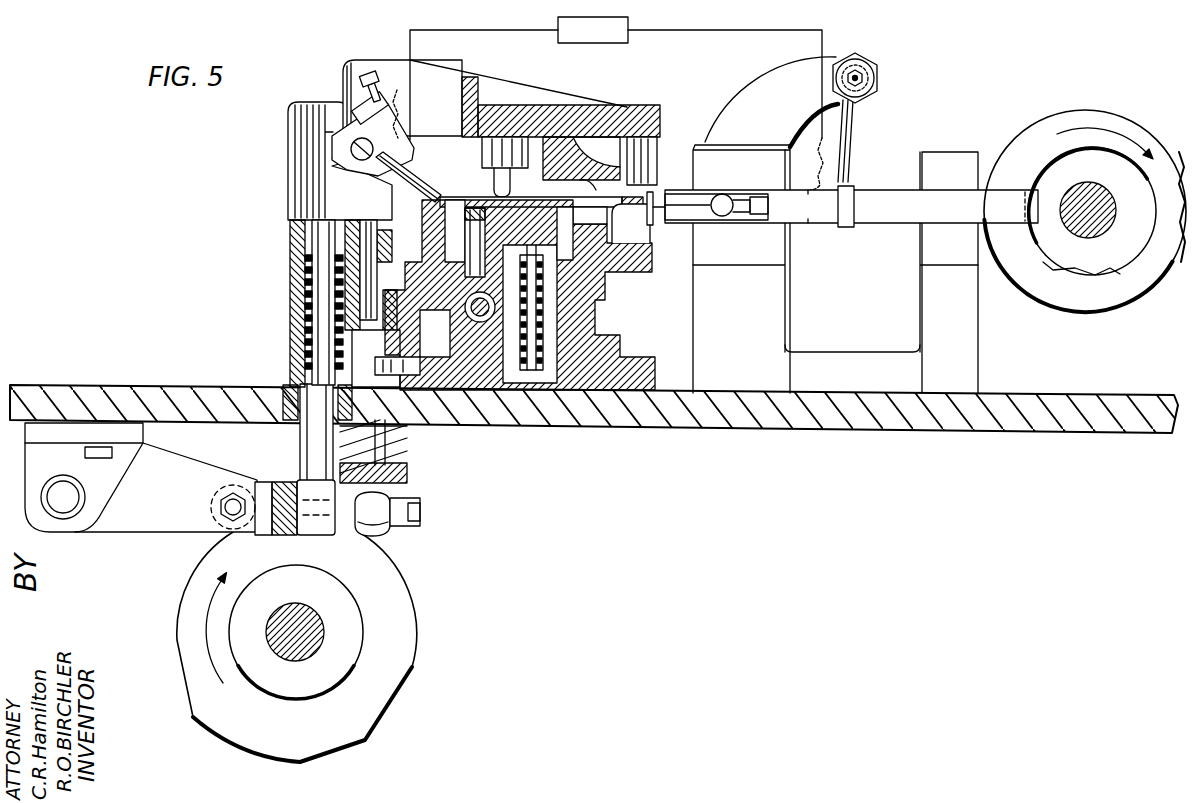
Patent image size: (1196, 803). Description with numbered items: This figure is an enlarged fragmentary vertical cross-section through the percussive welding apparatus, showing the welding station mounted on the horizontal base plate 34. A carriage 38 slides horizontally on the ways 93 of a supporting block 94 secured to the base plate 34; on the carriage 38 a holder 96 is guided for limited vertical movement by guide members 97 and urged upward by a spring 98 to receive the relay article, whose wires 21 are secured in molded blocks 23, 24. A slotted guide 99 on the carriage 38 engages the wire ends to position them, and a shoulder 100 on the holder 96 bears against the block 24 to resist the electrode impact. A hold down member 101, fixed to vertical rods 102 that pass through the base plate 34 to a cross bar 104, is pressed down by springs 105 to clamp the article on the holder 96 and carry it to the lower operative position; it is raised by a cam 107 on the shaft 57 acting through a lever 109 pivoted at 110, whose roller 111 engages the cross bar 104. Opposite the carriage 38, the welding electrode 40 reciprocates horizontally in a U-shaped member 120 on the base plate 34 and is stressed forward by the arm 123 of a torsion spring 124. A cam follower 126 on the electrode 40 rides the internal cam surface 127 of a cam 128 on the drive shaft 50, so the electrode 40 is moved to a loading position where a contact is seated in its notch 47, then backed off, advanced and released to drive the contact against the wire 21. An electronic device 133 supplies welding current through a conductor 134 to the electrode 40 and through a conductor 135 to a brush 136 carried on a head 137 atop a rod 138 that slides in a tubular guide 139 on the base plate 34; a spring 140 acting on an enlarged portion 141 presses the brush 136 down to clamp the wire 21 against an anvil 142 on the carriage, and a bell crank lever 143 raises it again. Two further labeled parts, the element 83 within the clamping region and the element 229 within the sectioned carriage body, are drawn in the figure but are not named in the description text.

The wire 21 is at (598, 186).
The molded block 23 is at (612, 166).
The molded block 24 is at (530, 190).
The base plate 34 is at (1098, 412).
The carriage 38 is at (604, 297).
The electrode 40 is at (692, 214).
The notch 47 is at (680, 203).
The drive shaft 50 is at (1100, 195).
The shaft 57 is at (312, 618).
The block 83 is at (556, 168).
The ways 93 is at (600, 345).
The supporting block 94 is at (600, 365).
The holder 96 is at (598, 232).
The guide members 97 is at (590, 272).
The spring 98 is at (596, 318).
The slotted guide 99 is at (656, 222).
The shoulder 100 is at (492, 180).
The hold down member 101 is at (590, 112).
The rods 102 is at (397, 441).
The cross bar 104 is at (392, 476).
The springs 105 is at (392, 455).
The cam 107 is at (395, 566).
The lever 109 is at (180, 520).
The pivot 110 is at (70, 503).
The roller 111 is at (387, 533).
The U-shaped member 120 is at (932, 290).
The arm 123 is at (850, 142).
The torsion spring 124 is at (882, 79).
The cam follower 126 is at (1028, 206).
The internal cam surface 127 is at (1043, 168).
The cam 128 is at (1090, 108).
The electronic device 133 is at (593, 30).
The conductor 134 is at (734, 32).
The conductor 135 is at (508, 32).
The brush 136 is at (425, 194).
The head 137 is at (305, 176).
The rod 138 is at (298, 244).
The tubular guide 139 is at (322, 266).
The spring 140 is at (308, 290).
The enlarged portion 141 is at (318, 430).
The anvil 142 is at (470, 240).
The bell crank lever 143 is at (290, 478).
The spring 229 is at (528, 380).